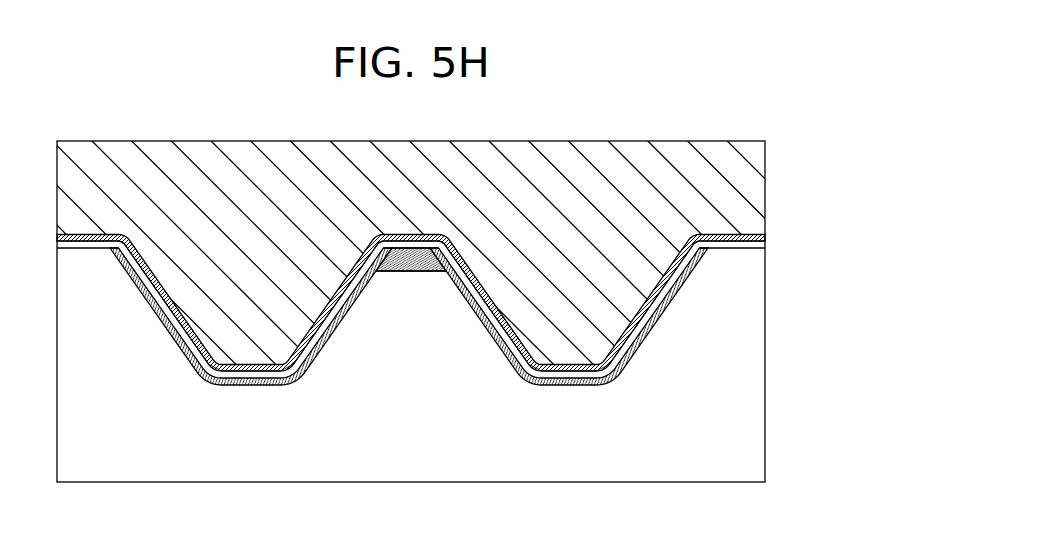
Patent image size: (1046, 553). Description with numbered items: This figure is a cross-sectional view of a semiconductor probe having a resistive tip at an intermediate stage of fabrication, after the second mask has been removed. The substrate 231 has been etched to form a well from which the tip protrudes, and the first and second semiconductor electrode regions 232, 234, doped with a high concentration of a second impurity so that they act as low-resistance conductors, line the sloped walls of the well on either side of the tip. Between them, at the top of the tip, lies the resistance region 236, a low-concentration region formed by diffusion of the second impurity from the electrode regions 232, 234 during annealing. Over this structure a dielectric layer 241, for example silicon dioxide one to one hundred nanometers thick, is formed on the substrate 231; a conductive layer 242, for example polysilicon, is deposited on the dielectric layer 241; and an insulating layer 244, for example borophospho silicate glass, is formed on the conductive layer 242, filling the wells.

The substrate 231 is at (752, 368).
The first semiconductor electrode region 232 is at (253, 386).
The second semiconductor electrode region 234 is at (563, 386).
The resistance region 236 is at (407, 258).
The dielectric layer 241 is at (752, 247).
The conductive layer 242 is at (763, 237).
The insulating layer 244 is at (760, 177).